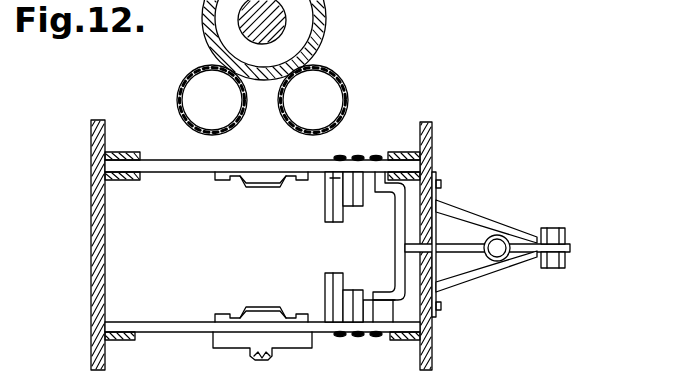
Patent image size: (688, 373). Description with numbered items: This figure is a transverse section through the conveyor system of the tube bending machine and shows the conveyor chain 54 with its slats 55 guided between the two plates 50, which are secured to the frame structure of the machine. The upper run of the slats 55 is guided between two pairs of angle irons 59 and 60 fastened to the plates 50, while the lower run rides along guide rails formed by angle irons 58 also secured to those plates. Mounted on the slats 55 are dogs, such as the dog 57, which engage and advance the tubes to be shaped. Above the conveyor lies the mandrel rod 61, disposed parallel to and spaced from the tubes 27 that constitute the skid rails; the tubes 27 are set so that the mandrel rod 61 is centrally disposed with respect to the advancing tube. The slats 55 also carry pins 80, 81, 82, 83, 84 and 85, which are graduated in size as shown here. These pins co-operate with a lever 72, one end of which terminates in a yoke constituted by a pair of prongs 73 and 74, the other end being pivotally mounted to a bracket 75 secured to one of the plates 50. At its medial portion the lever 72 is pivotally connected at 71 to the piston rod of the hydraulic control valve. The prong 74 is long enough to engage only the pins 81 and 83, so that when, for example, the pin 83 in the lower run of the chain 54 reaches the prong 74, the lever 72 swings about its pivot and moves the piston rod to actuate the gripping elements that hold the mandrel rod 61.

The tubes 27 is at (262, 100).
The mandrel rod 61 is at (290, 22).
The plates 50 is at (91, 272).
The slats 55 is at (270, 160).
The angle irons 59 is at (130, 147).
The angle irons 60 is at (402, 150).
The angle irons 58 is at (105, 356).
The conveyor chain 54 is at (265, 188).
The dog 57 is at (268, 352).
The pin 82 is at (326, 203).
The pin 81 is at (345, 200).
The pin 80 is at (352, 208).
The prong 73 is at (392, 195).
The pin 84 is at (378, 312).
The pin 85 is at (325, 277).
The pin 83 is at (347, 290).
The prong 74 is at (393, 290).
The bracket 75 is at (455, 207).
The lever 72 is at (465, 272).
The pivotal connection 71 is at (500, 240).